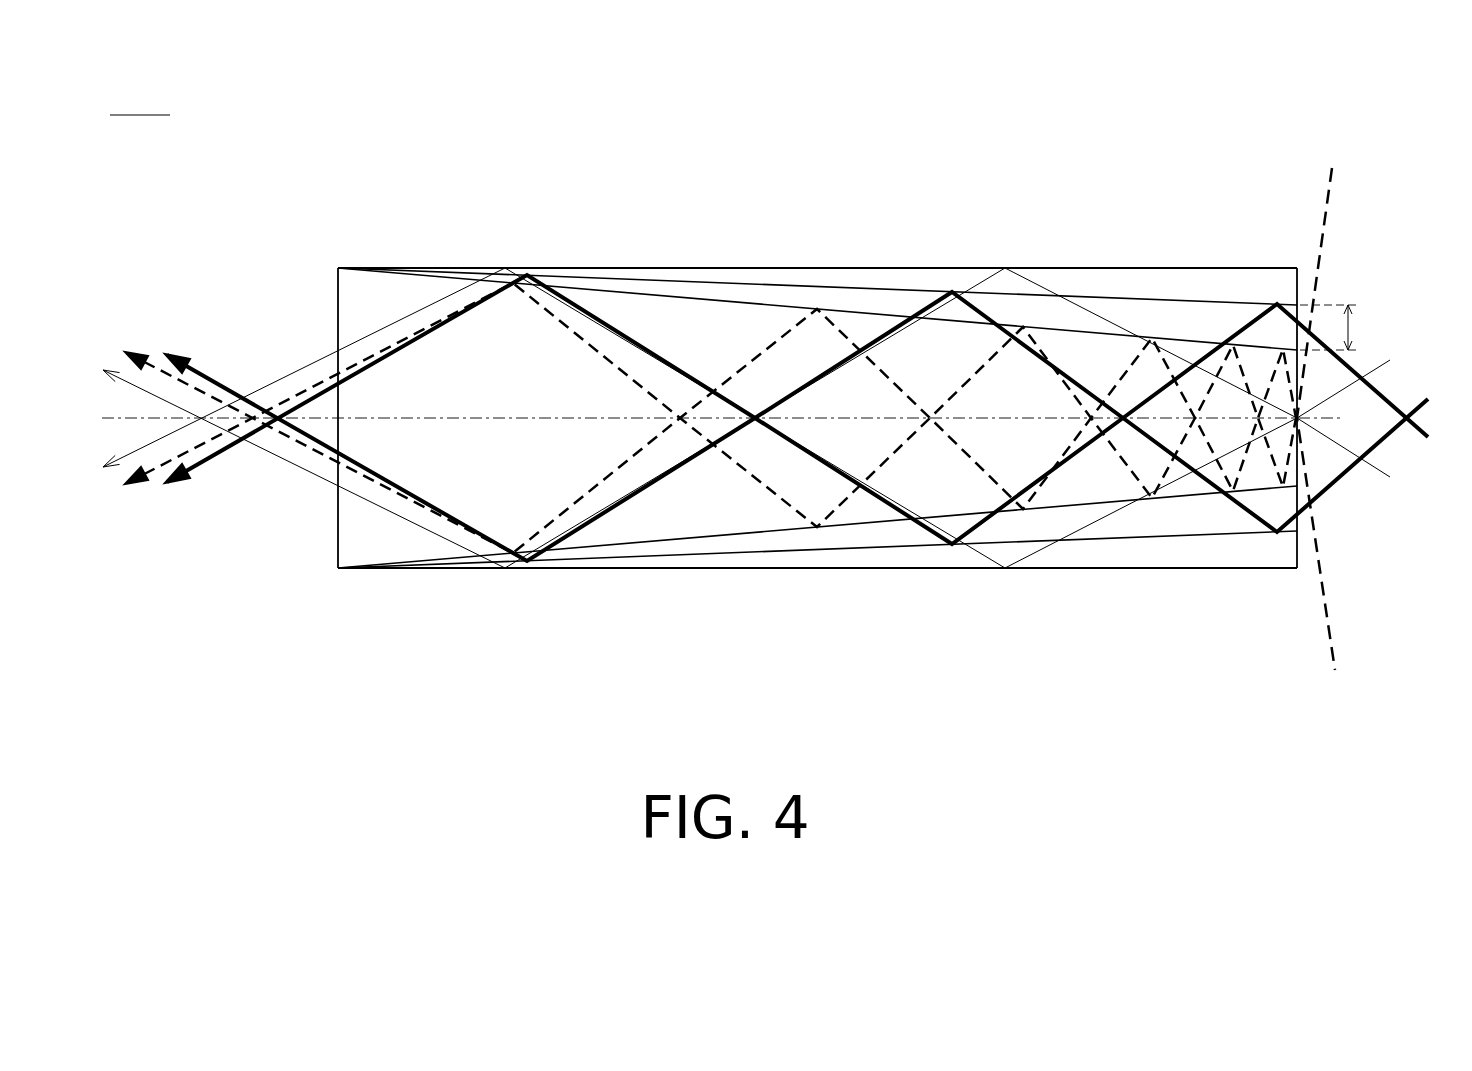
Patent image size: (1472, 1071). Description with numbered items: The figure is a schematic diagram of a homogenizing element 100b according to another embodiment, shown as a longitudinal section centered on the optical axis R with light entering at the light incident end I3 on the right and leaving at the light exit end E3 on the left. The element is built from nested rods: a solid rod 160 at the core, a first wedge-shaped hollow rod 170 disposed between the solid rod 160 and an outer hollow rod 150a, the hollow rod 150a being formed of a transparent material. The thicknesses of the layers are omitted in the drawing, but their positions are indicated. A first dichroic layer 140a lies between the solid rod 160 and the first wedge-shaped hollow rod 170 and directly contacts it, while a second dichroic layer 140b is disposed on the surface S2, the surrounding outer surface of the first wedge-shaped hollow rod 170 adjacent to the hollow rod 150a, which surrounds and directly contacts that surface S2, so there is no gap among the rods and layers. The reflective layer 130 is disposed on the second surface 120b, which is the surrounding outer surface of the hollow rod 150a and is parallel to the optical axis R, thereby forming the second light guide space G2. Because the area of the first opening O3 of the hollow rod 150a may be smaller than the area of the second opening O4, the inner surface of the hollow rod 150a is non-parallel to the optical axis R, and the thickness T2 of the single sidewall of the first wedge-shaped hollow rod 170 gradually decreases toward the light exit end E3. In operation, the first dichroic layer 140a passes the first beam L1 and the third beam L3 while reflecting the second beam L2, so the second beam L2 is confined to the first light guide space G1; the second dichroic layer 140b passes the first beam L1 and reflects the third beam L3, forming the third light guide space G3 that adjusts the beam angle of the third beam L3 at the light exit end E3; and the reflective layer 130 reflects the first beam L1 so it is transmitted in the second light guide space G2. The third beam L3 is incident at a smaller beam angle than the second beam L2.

The homogenizing element 100b is at (140, 102).
The second surface 120b is at (765, 266).
The reflective layer 130 is at (718, 267).
The first dichroic layer 140a is at (1187, 338).
The second dichroic layer 140b is at (818, 283).
The hollow rod 150a is at (1095, 280).
The solid rod 160 is at (668, 523).
The first wedge-shaped hollow rod 170 is at (870, 540).
The light exit end E3 is at (337, 267).
The light incident end I3 is at (1298, 268).
The first opening O3 is at (1297, 568).
The second opening O4 is at (338, 568).
The first light guide space G1 is at (625, 515).
The second light guide space G2 is at (872, 284).
The third light guide space G3 is at (1210, 314).
The surface S2 is at (917, 289).
The thickness T2 is at (1343, 327).
The first beam L1 is at (1380, 366).
The second beam L2 is at (1345, 190).
The third beam L3 is at (1412, 432).
The optical axis R is at (711, 418).